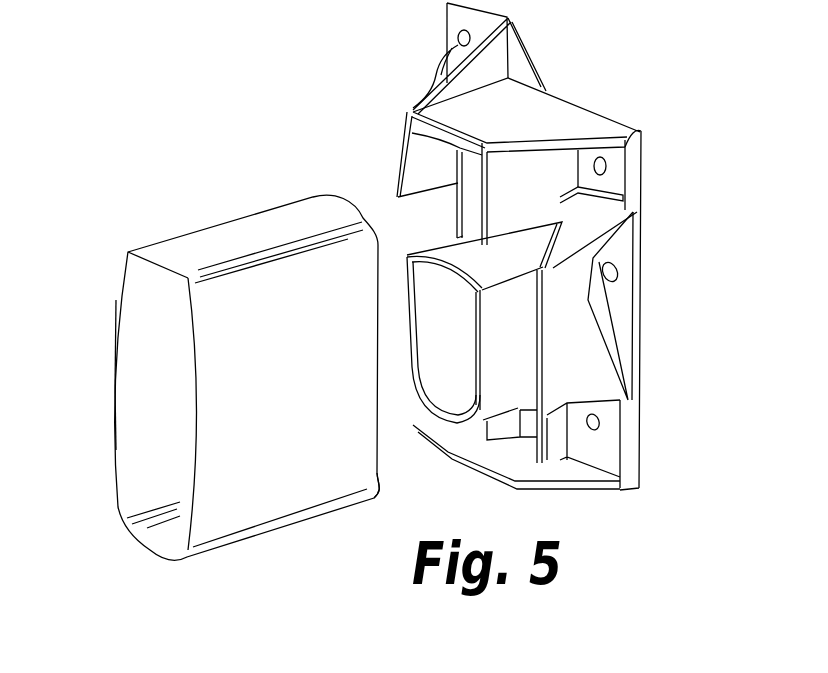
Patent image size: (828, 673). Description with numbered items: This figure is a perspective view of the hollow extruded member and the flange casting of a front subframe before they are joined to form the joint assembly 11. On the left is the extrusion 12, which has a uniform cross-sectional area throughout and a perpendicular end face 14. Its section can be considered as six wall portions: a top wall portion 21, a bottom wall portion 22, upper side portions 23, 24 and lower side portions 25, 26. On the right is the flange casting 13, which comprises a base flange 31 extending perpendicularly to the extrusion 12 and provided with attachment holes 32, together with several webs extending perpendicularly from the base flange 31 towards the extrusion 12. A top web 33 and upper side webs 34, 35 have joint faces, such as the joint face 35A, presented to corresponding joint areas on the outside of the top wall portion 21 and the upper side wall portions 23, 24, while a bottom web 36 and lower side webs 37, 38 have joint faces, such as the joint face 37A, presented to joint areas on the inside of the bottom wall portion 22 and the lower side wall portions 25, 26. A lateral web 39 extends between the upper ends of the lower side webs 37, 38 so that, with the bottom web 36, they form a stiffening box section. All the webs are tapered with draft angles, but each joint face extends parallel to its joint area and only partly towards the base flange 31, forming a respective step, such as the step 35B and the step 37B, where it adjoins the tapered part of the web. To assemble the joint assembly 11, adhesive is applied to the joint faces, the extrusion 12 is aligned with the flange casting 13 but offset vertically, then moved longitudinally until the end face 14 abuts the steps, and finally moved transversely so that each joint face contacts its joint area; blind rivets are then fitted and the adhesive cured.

The joint assembly 11 is at (150, 597).
The extrusion 12 is at (118, 470).
The flange casting 13 is at (640, 480).
The end face 14 is at (382, 490).
The top wall portion 21 is at (222, 245).
The bottom wall portion 22 is at (150, 550).
The upper side portion 23 is at (292, 319).
The upper side portion 24 is at (143, 310).
The lower side portion 25 is at (292, 479).
The lower side portion 26 is at (130, 423).
The base flange 31 is at (635, 168).
The attachment holes 32 is at (460, 42).
The top web 33 is at (518, 118).
The upper side web 34 is at (538, 194).
The upper side web 35 is at (408, 153).
The joint face 35A is at (422, 172).
The step 35B is at (402, 123).
The bottom web 36 is at (457, 403).
The lower side web 37 is at (502, 377).
The joint face 37A is at (532, 349).
The step 37B is at (560, 323).
The lower side web 38 is at (458, 329).
The lateral web 39 is at (443, 257).